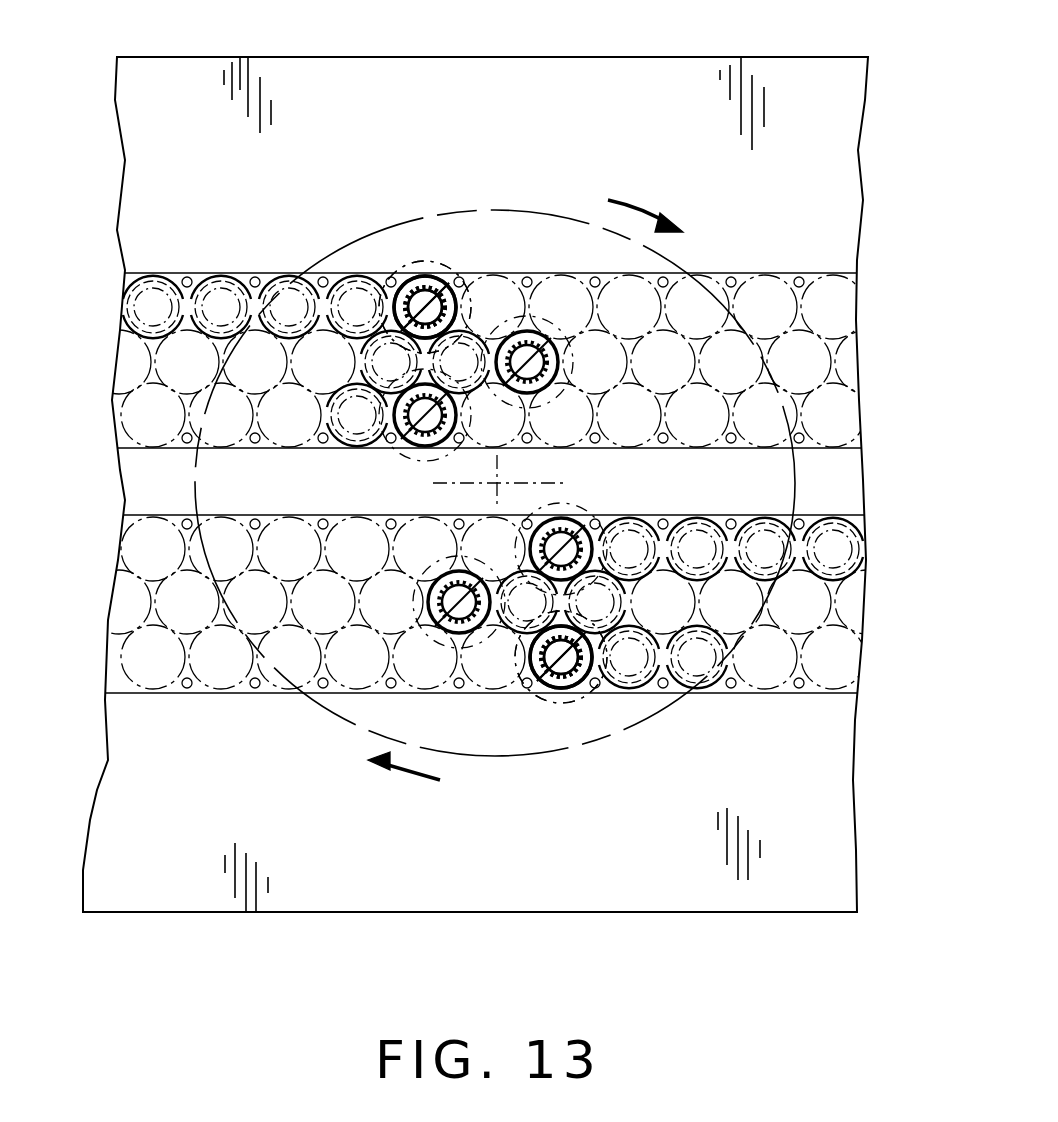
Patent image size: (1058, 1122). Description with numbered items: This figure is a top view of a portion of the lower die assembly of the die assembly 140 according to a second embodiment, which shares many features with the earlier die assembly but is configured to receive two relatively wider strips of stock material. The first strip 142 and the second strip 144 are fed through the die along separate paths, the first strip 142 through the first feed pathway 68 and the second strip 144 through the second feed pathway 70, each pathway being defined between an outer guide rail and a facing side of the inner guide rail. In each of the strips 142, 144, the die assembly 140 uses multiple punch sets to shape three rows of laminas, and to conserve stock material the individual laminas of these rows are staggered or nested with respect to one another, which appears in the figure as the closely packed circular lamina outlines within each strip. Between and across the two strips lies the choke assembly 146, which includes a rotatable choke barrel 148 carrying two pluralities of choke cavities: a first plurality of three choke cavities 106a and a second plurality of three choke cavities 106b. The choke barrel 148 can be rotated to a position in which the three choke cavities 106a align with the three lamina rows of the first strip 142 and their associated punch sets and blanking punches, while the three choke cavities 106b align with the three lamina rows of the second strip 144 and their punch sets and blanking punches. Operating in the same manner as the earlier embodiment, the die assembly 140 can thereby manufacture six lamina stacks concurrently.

The die assembly 140 is at (491, 462).
The second feed pathway 70 is at (469, 321).
The first feed pathway 68 is at (511, 616).
The second strip 144 is at (150, 373).
The first strip 142 is at (835, 618).
The first plurality of choke cavities 106a is at (567, 503).
The second plurality of choke cavities 106b is at (410, 263).
The choke barrel 148 is at (565, 210).
The choke assembly 146 is at (370, 732).